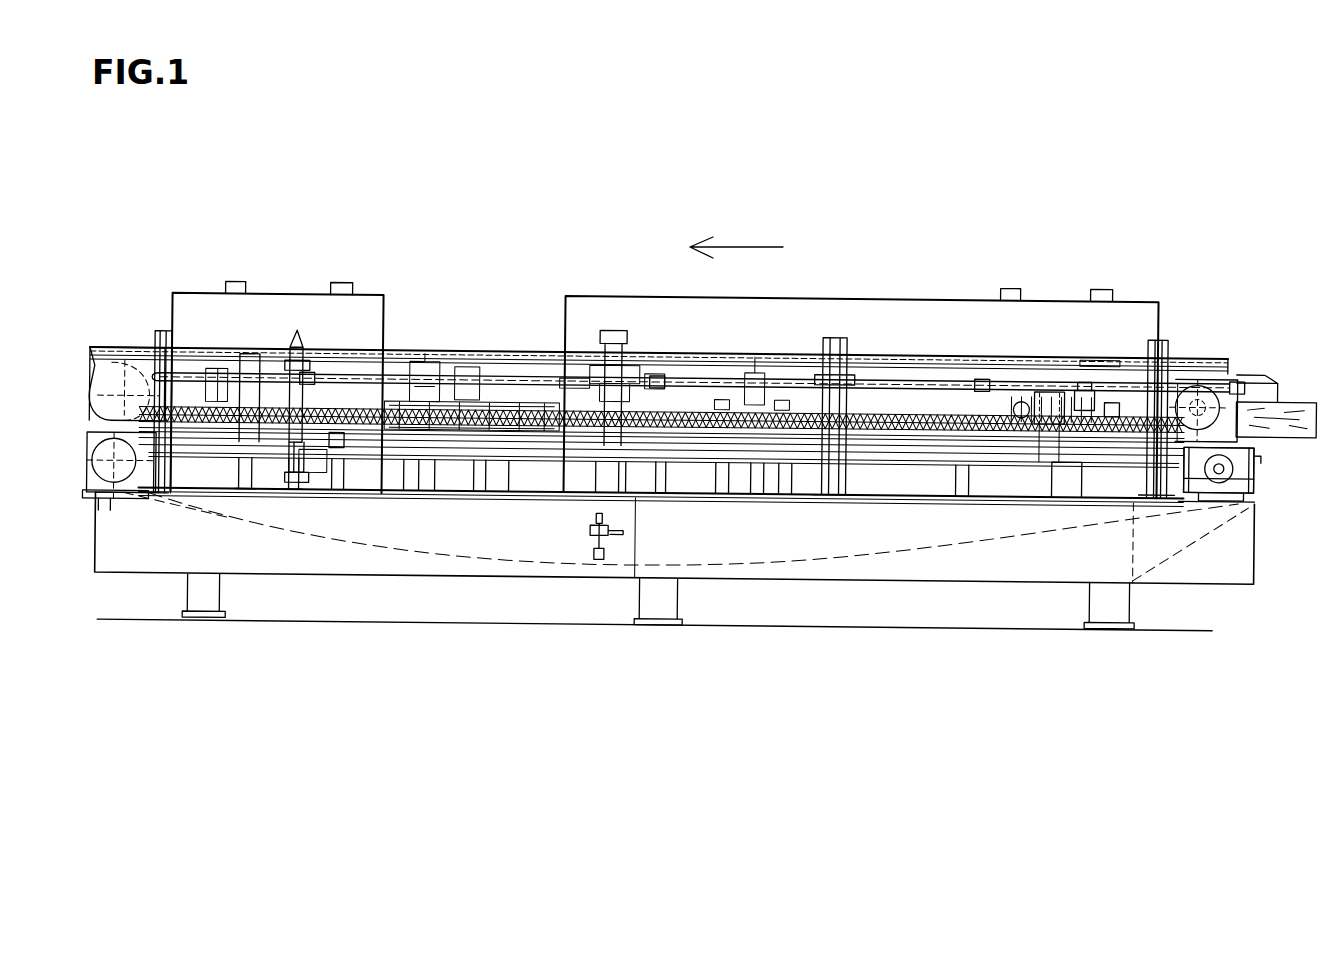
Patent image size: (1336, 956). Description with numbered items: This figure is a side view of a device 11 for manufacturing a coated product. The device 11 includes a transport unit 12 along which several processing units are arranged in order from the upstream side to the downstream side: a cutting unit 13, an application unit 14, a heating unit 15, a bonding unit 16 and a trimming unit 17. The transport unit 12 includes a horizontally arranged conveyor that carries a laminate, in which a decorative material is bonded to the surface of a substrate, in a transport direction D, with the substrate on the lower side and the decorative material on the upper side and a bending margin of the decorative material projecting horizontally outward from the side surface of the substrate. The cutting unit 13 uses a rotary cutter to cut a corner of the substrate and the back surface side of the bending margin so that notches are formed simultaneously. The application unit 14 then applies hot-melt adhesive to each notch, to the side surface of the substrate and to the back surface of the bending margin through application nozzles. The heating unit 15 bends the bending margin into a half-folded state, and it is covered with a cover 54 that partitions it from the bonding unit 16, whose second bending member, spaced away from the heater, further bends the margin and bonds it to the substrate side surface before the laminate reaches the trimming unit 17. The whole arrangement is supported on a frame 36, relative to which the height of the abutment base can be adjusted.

The device for manufacturing a coated product 11 is at (925, 222).
The transport unit 12 is at (980, 418).
The cutting unit 13 is at (1090, 358).
The application unit 14 is at (947, 410).
The heating unit 15 is at (704, 387).
The bonding unit 16 is at (567, 408).
The trimming unit 17 is at (270, 332).
The frame 36 is at (1262, 538).
The cover 54 is at (580, 297).
The transport direction D is at (742, 246).